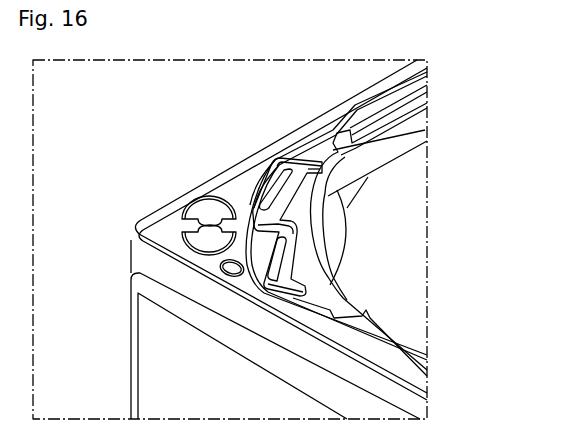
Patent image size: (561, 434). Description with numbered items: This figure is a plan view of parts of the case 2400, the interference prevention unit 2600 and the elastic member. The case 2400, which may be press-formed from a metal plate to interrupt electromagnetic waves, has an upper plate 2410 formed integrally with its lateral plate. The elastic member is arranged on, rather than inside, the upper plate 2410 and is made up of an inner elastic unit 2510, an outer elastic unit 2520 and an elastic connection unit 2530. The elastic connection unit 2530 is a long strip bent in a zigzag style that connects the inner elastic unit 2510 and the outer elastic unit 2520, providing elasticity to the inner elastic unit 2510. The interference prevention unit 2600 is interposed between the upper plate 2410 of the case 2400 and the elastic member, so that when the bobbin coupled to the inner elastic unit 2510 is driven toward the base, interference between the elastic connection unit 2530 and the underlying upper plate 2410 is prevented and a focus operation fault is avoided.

The case 2400 is at (123, 338).
The upper plate 2410 is at (337, 227).
The inner elastic unit 2510 is at (325, 263).
The outer elastic unit 2520 is at (232, 183).
The elastic connection unit 2530 is at (282, 163).
The interference prevention unit 2600 is at (133, 236).